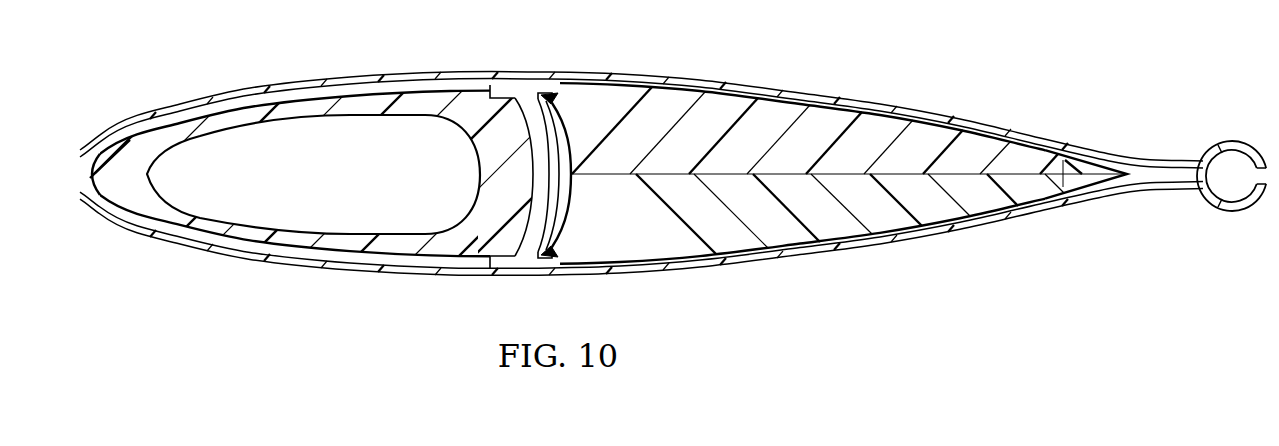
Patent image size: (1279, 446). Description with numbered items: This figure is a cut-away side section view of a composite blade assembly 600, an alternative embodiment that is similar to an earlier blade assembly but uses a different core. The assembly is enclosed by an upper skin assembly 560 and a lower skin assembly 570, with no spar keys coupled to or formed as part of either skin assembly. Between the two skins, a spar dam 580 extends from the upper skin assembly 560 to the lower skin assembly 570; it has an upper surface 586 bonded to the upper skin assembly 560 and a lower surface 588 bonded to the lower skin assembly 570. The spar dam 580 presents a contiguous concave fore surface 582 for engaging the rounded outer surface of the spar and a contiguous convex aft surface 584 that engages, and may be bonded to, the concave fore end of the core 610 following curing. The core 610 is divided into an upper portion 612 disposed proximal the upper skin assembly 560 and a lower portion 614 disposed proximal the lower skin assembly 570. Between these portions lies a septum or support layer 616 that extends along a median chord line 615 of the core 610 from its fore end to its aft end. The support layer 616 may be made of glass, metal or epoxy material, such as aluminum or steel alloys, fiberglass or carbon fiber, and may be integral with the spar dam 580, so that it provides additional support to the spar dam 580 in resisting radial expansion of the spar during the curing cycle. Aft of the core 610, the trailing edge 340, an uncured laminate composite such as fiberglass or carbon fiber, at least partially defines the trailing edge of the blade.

The composite blade assembly 600 is at (633, 164).
The upper skin assembly 560 is at (805, 90).
The lower skin assembly 570 is at (773, 260).
The spar dam 580 is at (564, 176).
The concave fore surface 582 is at (492, 98).
The convex aft surface 584 is at (548, 97).
The upper surface 586 is at (518, 82).
The lower surface 588 is at (526, 273).
The core 610 is at (938, 139).
The upper portion 612 is at (713, 145).
The lower portion 614 is at (713, 225).
The median chord line 615 is at (1024, 172).
The support layer 616 is at (962, 176).
The trailing edge 340 is at (1083, 167).